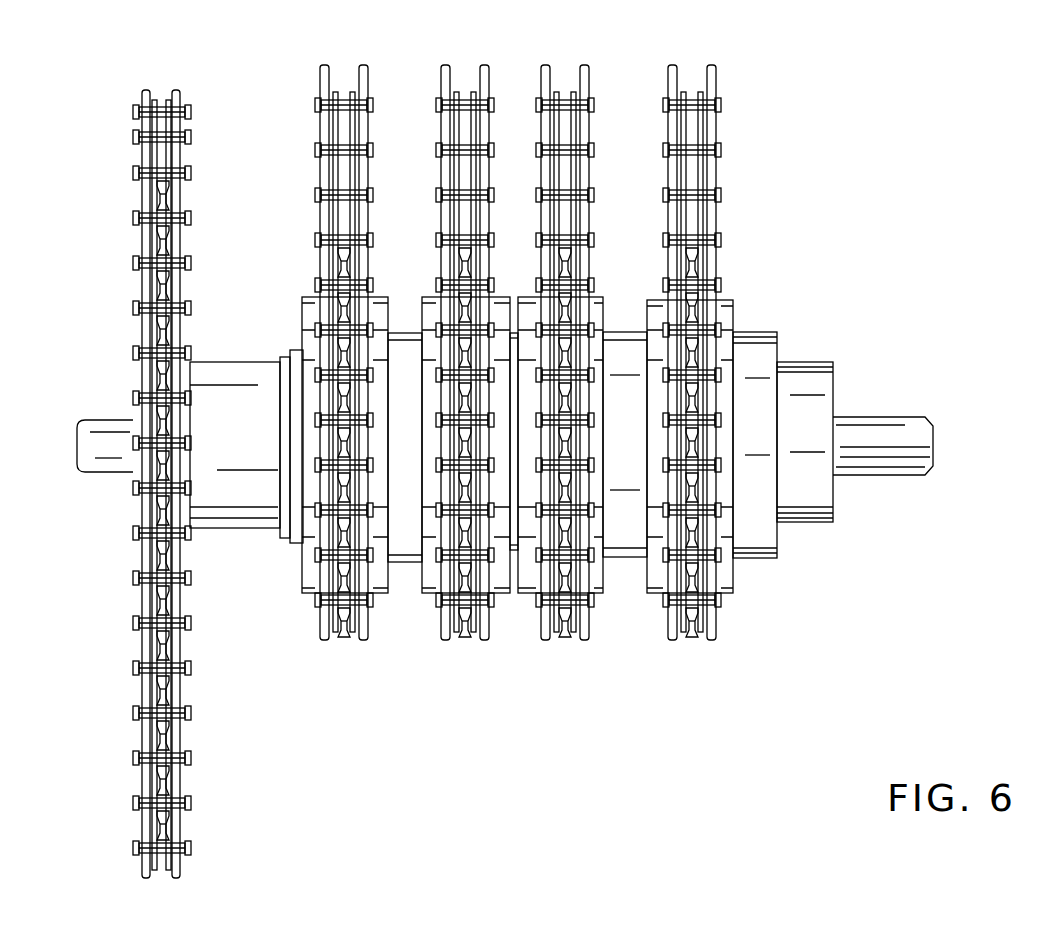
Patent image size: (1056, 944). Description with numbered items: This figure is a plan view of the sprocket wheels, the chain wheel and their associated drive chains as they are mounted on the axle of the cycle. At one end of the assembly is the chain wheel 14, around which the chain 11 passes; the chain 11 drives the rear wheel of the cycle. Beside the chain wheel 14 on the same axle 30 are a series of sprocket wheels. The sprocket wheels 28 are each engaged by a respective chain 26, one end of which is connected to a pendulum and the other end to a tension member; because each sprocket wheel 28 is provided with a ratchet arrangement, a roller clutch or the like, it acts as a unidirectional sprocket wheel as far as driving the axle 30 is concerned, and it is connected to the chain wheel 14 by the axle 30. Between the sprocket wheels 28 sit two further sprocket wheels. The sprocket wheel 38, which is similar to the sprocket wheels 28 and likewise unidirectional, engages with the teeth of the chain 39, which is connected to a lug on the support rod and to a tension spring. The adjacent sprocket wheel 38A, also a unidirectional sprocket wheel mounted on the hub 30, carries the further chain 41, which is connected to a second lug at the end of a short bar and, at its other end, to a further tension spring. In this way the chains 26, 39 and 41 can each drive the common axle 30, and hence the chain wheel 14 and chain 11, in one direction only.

The chain 11 is at (190, 818).
The chain wheel 14 is at (143, 240).
The chain 26 is at (322, 178).
The sprocket wheel 28 is at (343, 640).
The axle 30 is at (891, 419).
The sprocket wheel 38 is at (470, 640).
The sprocket wheel 38A is at (563, 640).
The chain 39 is at (443, 178).
The chain 41 is at (582, 127).